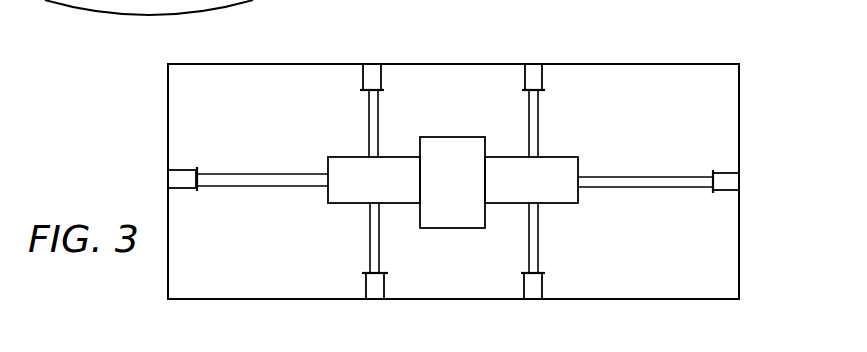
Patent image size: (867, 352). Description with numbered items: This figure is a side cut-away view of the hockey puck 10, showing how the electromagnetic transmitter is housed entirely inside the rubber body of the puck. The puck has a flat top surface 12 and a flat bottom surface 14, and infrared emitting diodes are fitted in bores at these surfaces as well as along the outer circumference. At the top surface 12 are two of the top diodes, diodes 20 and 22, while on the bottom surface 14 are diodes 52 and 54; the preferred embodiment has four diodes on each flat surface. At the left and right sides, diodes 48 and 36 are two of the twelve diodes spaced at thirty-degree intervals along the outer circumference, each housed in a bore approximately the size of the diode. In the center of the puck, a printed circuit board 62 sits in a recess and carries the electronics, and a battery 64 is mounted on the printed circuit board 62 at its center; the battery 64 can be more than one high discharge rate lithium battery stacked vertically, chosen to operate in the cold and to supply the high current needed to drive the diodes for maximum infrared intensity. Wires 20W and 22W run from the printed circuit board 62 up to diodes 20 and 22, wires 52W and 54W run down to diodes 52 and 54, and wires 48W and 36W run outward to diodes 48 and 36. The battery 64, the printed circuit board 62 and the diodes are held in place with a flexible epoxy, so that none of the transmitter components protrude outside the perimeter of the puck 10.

The hockey puck 10 is at (528, 27).
The flat top surface 12 is at (338, 63).
The flat bottom surface 14 is at (278, 300).
The infrared emitting diode 20 is at (372, 63).
The wire 20W is at (368, 120).
The infrared emitting diode 22 is at (535, 64).
The wire 22W is at (536, 121).
The infrared emitting diode 36 is at (733, 180).
The wire 36W is at (653, 176).
The infrared emitting diode 48 is at (173, 180).
The wire 48W is at (267, 173).
The infrared emitting diode 52 is at (377, 290).
The wire 52W is at (380, 238).
The infrared emitting diode 54 is at (532, 290).
The wire 54W is at (533, 243).
The printed circuit board 62 is at (570, 160).
The battery 64 is at (445, 145).